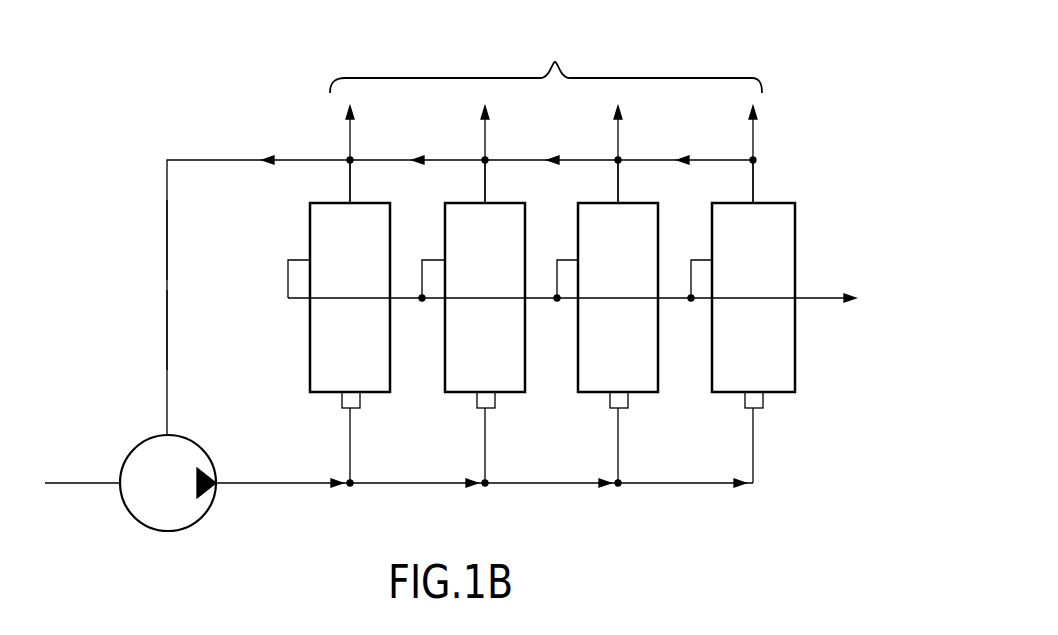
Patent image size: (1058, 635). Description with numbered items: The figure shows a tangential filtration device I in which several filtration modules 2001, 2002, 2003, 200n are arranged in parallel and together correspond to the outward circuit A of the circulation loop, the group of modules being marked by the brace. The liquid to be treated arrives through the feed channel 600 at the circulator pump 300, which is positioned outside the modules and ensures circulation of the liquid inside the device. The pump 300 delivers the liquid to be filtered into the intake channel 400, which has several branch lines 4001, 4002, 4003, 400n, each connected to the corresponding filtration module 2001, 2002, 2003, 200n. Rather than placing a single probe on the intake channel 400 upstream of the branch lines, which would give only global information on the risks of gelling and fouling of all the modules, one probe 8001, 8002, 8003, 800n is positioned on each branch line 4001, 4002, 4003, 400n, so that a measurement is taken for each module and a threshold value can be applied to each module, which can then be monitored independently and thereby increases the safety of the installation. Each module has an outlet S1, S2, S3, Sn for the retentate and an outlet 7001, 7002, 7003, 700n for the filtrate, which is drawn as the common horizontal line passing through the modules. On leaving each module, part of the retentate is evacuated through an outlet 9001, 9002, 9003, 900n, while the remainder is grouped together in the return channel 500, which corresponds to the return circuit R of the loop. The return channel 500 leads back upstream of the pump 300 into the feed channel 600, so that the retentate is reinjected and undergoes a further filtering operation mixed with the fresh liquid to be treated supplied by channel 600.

The outward circuit A is at (546, 64).
The return channel 500 is at (223, 158).
The filtering device I is at (134, 239).
The return circuit R is at (135, 317).
The feed channel 600 is at (84, 483).
The circulator pump 300 is at (168, 531).
The intake channel 400 is at (266, 486).
The evacuation outlet of first module 9001 is at (352, 138).
The evacuation outlet of second module 9002 is at (487, 138).
The evacuation outlet of third module 9003 is at (620, 138).
The evacuation outlet of nth module 900n is at (755, 138).
The retentate outlet of first module S1 is at (348, 201).
The retentate outlet of second module S2 is at (483, 201).
The retentate outlet of third module S3 is at (616, 201).
The retentate outlet of nth module Sn is at (753, 201).
The first filtration module 2001 is at (331, 358).
The second filtration module 2002 is at (466, 358).
The third filtration module 2003 is at (599, 358).
The nth filtration module 200n is at (733, 358).
The filtrate outlet of first module 7001 is at (302, 244).
The filtrate outlet of second module 7002 is at (436, 244).
The filtrate outlet of third module 7003 is at (571, 244).
The filtrate outlet of nth module 700n is at (705, 244).
The probe of first branch line 8001 is at (360, 396).
The probe of second branch line 8002 is at (495, 396).
The probe of third branch line 8003 is at (628, 396).
The probe of nth branch line 800n is at (763, 396).
The first branch line 4001 is at (350, 457).
The second branch line 4002 is at (485, 457).
The third branch line 4003 is at (618, 457).
The branch line of nth module 400n is at (753, 457).